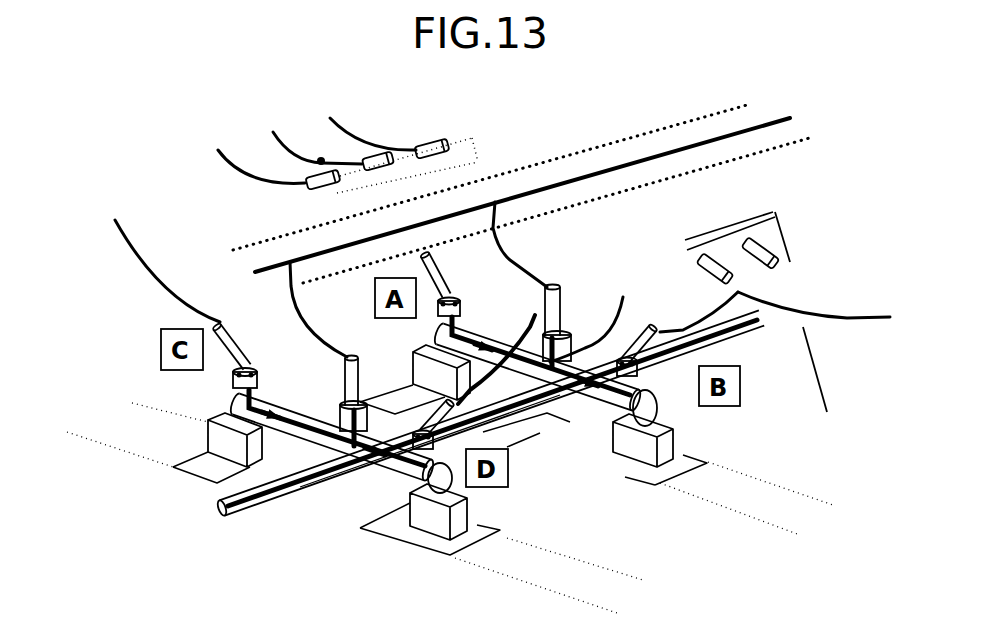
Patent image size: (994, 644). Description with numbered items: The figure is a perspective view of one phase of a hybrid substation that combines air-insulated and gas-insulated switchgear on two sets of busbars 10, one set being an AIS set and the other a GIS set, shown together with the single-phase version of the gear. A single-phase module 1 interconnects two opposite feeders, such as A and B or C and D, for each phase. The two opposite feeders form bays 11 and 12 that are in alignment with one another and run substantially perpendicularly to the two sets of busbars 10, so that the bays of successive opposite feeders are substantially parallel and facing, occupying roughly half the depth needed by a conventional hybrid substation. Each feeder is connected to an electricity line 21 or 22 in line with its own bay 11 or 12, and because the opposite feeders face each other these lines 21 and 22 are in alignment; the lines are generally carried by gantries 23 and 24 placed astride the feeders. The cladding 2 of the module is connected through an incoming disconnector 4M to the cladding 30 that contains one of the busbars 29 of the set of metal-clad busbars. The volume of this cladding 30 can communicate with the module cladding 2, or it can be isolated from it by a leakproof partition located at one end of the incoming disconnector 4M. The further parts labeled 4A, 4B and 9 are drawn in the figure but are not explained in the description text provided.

The single-phase module 1 is at (274, 444).
The cladding of a module 2 is at (350, 472).
The tee fitting at station C 4A is at (235, 395).
The tee fitting at station D 4B is at (403, 460).
The incoming disconnector 4M is at (320, 450).
The guide rail 9 is at (560, 201).
The sets of busbars 10 is at (745, 102).
The bay 11 is at (188, 442).
The bay 12 is at (538, 568).
The electricity line 21 is at (350, 93).
The electricity line 22 is at (789, 287).
The gantry 23 is at (488, 141).
The gantry 24 is at (761, 201).
The busbar 29 is at (223, 513).
The cladding 30 is at (260, 508).